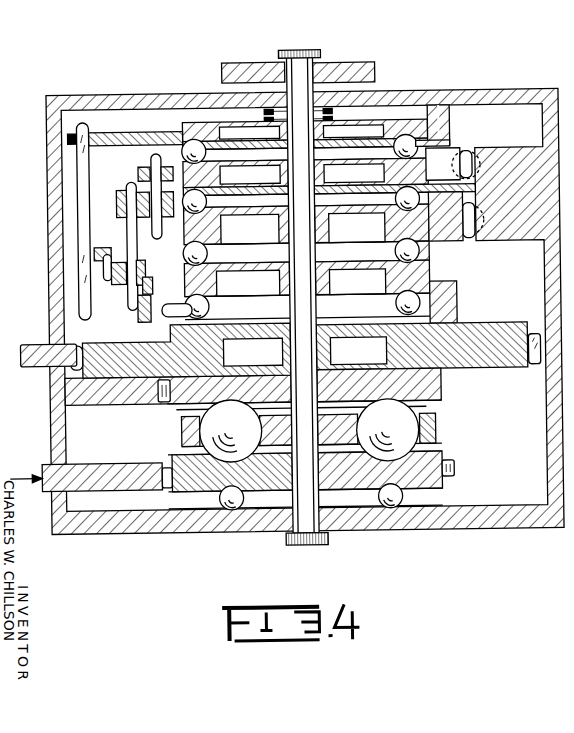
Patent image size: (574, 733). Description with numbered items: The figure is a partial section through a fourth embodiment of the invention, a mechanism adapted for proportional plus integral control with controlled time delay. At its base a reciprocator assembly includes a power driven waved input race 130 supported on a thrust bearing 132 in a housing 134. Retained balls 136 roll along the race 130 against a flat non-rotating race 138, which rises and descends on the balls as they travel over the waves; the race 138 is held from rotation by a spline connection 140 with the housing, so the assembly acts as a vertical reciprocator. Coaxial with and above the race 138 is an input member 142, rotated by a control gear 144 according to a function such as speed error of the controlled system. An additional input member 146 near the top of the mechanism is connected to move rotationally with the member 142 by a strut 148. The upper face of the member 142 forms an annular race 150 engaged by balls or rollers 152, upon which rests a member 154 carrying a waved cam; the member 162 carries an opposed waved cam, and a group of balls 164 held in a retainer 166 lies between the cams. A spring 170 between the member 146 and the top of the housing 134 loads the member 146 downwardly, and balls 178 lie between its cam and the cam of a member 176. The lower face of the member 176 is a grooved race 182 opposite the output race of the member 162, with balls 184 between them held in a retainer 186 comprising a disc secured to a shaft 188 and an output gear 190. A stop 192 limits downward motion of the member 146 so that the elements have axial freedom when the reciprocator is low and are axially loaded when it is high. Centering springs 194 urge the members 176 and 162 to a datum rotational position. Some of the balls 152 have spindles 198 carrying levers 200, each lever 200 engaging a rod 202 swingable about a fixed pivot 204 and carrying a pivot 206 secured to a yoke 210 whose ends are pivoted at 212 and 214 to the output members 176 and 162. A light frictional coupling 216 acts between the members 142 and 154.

The waved input race 130 is at (442, 491).
The thrust bearing 132 is at (228, 508).
The housing 134 is at (509, 92).
The retained balls 136 is at (232, 414).
The flat non-rotating race 138 is at (440, 386).
The spline connection 140 is at (160, 388).
The input member 142 is at (468, 371).
The control gear 144 is at (42, 365).
The additional input member 146 is at (167, 130).
The strut 148 is at (78, 178).
The annular race 150 is at (373, 316).
The balls or rollers 152 is at (212, 305).
The member 154 is at (430, 269).
The member 162 is at (380, 233).
The balls 164 is at (306, 278).
The retainer 166 is at (430, 251).
The spring 170 is at (378, 95).
The member 176 is at (420, 159).
The balls 178 is at (446, 128).
The grooved race 182 is at (375, 168).
The balls 184 is at (418, 202).
The retainer 186 is at (455, 192).
The shaft 188 is at (272, 66).
The gear 190 is at (343, 66).
The stop 192 is at (451, 148).
The centering springs 194 is at (487, 180).
The spindles 198 is at (144, 295).
The lever 200 is at (120, 302).
The rod 202 is at (131, 216).
The fixed pivot 204 is at (100, 282).
The pivot 206 is at (130, 192).
The yoke 210 is at (152, 155).
The pivot 212 is at (162, 189).
The pivot 214 is at (155, 272).
The frictional coupling 216 is at (453, 334).